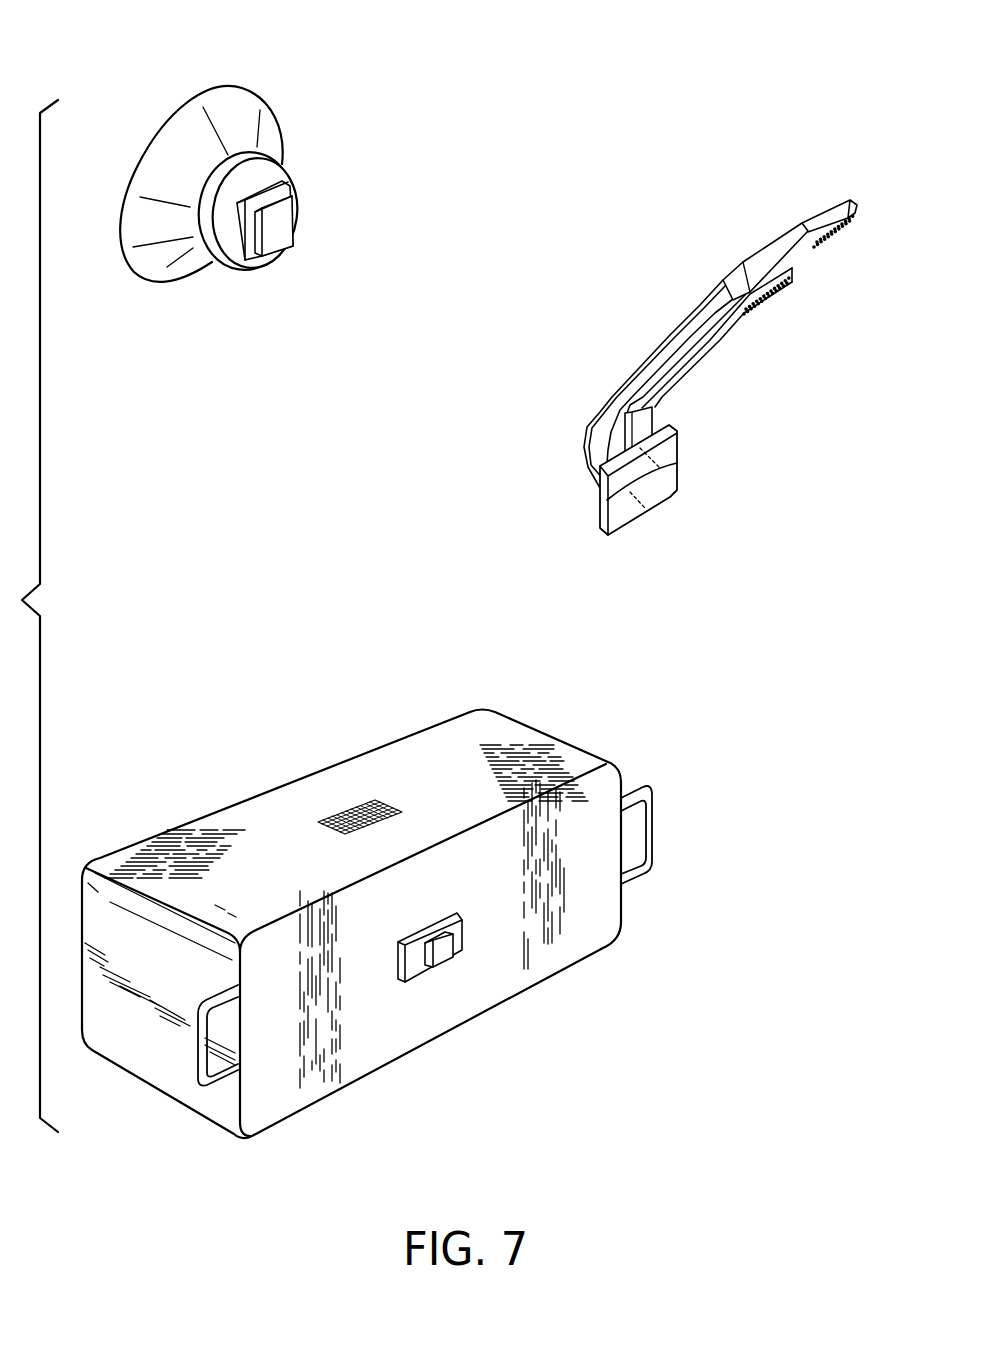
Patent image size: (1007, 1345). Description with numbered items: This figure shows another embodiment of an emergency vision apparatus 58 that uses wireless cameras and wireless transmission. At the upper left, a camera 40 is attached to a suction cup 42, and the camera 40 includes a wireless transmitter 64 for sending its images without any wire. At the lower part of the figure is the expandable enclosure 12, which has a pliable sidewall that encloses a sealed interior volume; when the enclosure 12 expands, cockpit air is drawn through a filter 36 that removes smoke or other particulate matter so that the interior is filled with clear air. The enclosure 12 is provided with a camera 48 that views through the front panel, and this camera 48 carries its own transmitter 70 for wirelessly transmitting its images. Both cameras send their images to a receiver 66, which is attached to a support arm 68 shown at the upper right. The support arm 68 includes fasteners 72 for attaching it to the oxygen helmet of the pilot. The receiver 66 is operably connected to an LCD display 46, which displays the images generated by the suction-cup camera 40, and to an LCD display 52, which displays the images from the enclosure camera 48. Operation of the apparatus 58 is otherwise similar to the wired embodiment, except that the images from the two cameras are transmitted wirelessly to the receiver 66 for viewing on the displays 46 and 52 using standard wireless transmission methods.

The enclosure 12 is at (367, 893).
The filter 36 is at (361, 796).
The camera 40 is at (283, 188).
The suction cup 42 is at (214, 100).
The LCD display 46 is at (694, 479).
The camera 48 is at (465, 1024).
The LCD display 52 is at (673, 487).
The emergency vision apparatus 58 is at (497, 234).
The wireless transmitter 64 is at (277, 242).
The receiver 66 is at (760, 255).
The support arm 68 is at (706, 349).
The transmitter 70 is at (446, 960).
The fasteners 72 is at (833, 233).